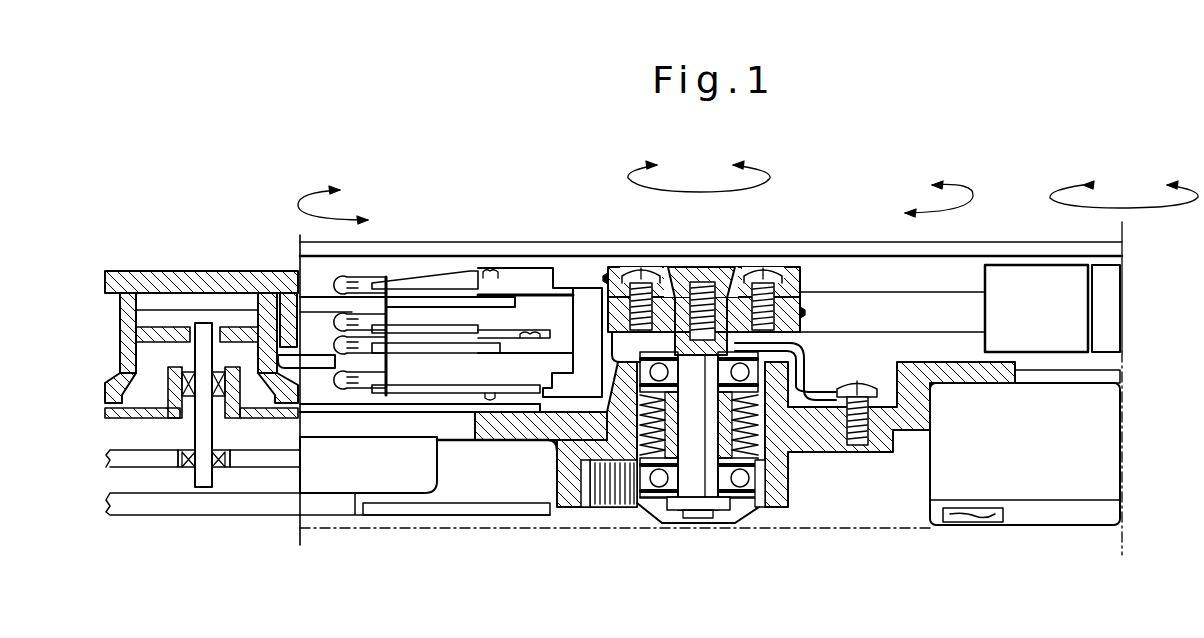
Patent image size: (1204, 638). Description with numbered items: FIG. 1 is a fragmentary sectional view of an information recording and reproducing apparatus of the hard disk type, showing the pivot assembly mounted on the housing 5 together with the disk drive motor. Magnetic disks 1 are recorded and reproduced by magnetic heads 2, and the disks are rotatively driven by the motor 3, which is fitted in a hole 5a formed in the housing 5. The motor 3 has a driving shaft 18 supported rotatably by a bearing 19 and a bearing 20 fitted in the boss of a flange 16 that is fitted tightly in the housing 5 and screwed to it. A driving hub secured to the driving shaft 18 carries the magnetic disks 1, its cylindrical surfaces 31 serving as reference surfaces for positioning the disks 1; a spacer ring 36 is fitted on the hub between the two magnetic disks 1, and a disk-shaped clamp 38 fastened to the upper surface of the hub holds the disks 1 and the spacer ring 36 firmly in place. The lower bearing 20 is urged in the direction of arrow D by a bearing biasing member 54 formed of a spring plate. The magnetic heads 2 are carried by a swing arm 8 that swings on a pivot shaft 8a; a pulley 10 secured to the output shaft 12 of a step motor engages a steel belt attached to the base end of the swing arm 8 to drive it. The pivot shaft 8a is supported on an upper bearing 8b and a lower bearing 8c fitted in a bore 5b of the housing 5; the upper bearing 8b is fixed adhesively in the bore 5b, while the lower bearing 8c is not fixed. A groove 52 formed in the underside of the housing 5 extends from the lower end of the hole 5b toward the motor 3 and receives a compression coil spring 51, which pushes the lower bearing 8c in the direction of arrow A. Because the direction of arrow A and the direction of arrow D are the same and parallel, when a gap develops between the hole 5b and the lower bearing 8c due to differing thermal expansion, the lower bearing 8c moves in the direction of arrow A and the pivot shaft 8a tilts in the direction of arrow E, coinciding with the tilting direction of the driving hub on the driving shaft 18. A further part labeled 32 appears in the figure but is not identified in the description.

The magnetic disks 1 is at (505, 357).
The magnetic heads 2 is at (371, 318).
The motor 3 is at (332, 478).
The housing 5 is at (575, 493).
The hole 5a is at (445, 443).
The bore 5b is at (760, 437).
The swing arm 8 is at (868, 310).
The pivot shaft 8a is at (693, 488).
The upper bearing 8b is at (785, 342).
The lower bearing 8c is at (755, 493).
The pulley 10 is at (1108, 282).
The output shaft 12 is at (1083, 465).
The flange 16 is at (250, 423).
The driving shaft 18 is at (203, 483).
The bearing 19 is at (178, 388).
The bearing 20 is at (212, 467).
The cylindrical surfaces 31 is at (108, 321).
The flange 32 is at (100, 390).
The spacer ring 36 is at (303, 300).
The clamp 38 is at (215, 272).
The compression coil spring 51 is at (590, 482).
The groove 52 is at (592, 470).
The bearing biasing member 54 is at (182, 467).
The arrow A is at (590, 538).
The arrow D is at (168, 483).
The arrow E is at (630, 213).